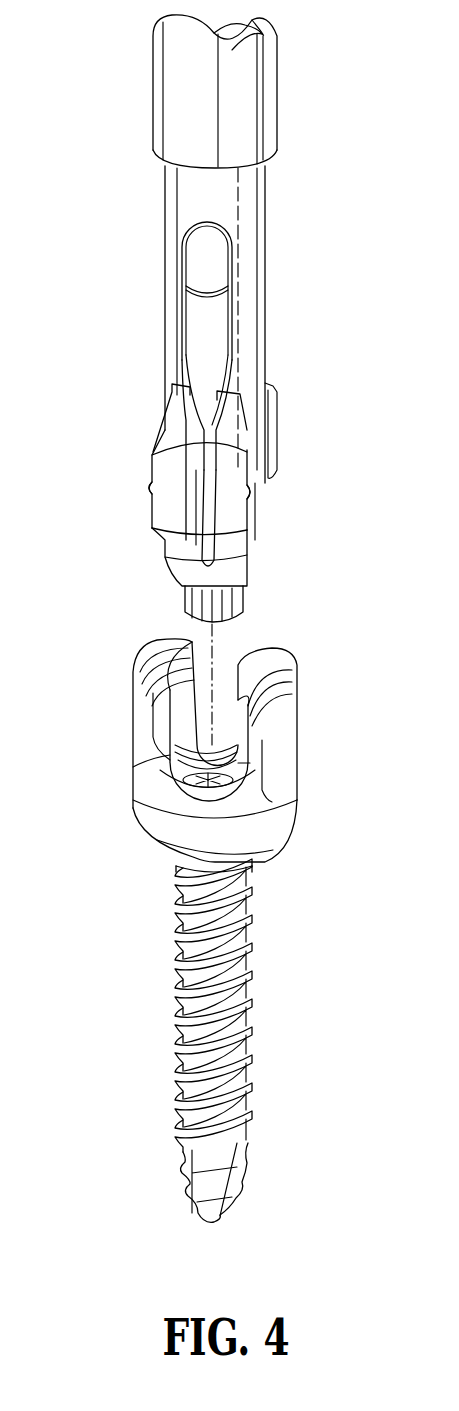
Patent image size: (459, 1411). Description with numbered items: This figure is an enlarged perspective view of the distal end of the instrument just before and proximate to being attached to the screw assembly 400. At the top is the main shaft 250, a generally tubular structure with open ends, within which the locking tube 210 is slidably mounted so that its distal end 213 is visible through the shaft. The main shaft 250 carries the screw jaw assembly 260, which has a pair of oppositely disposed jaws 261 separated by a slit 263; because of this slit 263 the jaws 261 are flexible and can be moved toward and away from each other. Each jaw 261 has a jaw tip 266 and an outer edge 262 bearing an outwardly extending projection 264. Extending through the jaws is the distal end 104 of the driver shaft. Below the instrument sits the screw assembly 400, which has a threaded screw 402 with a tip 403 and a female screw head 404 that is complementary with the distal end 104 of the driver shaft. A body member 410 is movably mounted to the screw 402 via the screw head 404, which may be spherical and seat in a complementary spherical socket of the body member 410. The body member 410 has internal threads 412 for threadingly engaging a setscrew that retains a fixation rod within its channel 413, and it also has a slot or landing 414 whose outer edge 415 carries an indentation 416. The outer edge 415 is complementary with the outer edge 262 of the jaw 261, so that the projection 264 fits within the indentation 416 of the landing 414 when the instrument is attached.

The main shaft 250 is at (278, 82).
The screw jaw assembly 260 is at (163, 331).
The locking tube 210 is at (216, 278).
The distal end 213 is at (225, 288).
The slit 263 is at (207, 470).
The jaws 261 is at (151, 456).
The outwardly extending projection 264 is at (138, 491).
The outer edge 262 is at (152, 528).
The jaw tip 266 is at (243, 570).
The distal end 104 is at (246, 596).
The body member 410 is at (302, 676).
The internal threads 412 is at (212, 662).
The indentation 416 is at (146, 703).
The outer edge 415 is at (153, 738).
The slot or landing 414 is at (151, 752).
The channel 413 is at (181, 792).
The female screw head 404 is at (206, 793).
The threaded screw 402 is at (254, 995).
The tip 403 is at (196, 1218).
The screw assembly 400 is at (123, 1022).